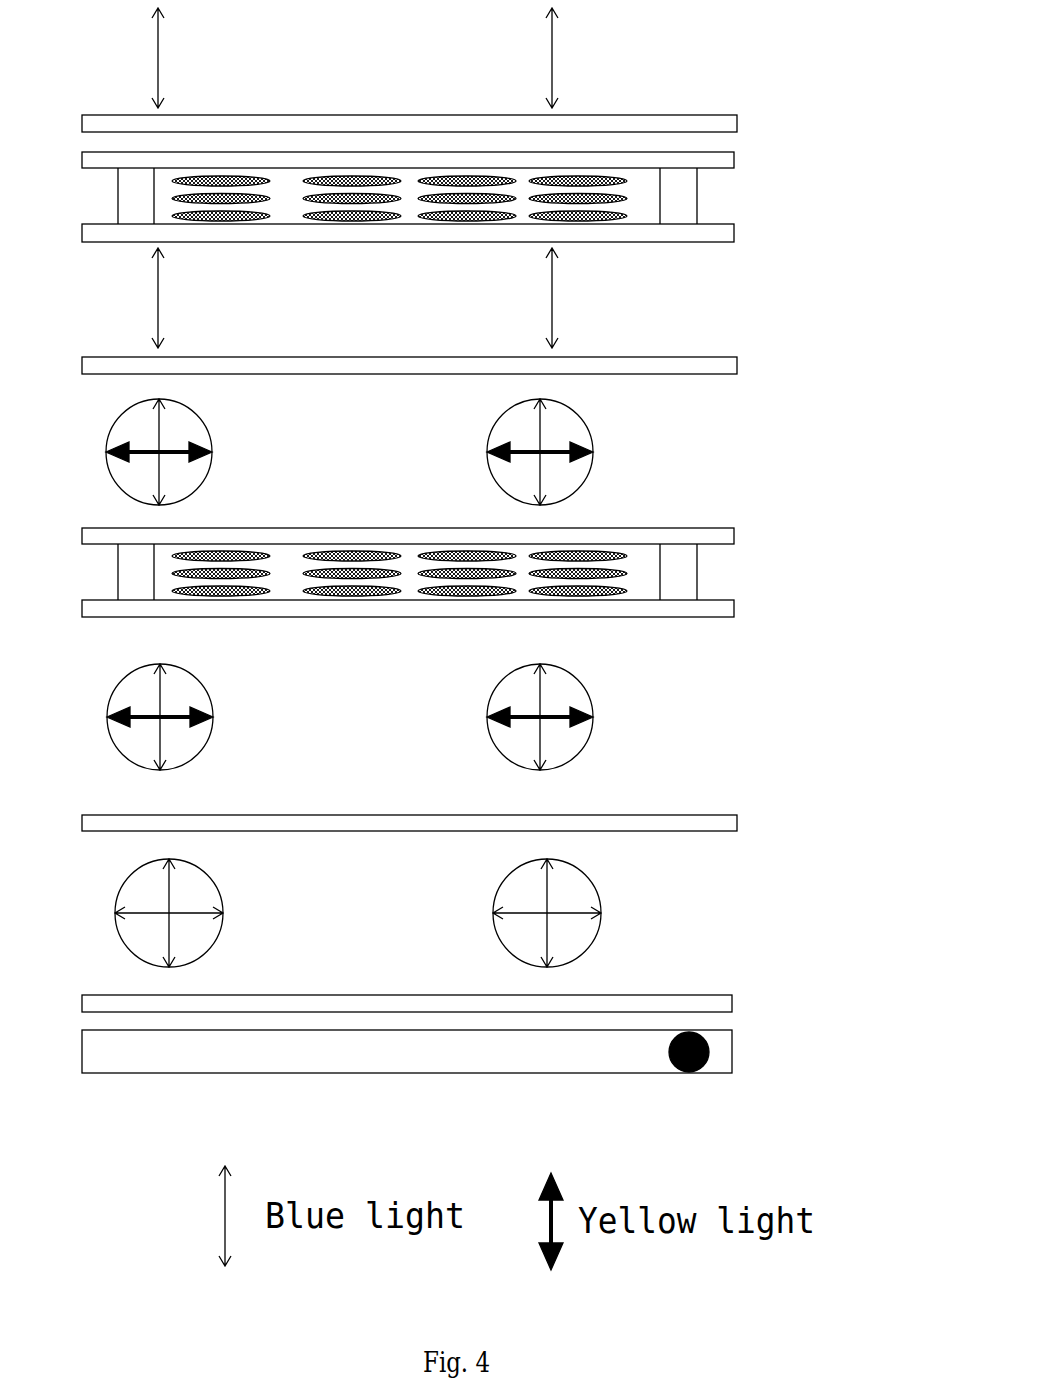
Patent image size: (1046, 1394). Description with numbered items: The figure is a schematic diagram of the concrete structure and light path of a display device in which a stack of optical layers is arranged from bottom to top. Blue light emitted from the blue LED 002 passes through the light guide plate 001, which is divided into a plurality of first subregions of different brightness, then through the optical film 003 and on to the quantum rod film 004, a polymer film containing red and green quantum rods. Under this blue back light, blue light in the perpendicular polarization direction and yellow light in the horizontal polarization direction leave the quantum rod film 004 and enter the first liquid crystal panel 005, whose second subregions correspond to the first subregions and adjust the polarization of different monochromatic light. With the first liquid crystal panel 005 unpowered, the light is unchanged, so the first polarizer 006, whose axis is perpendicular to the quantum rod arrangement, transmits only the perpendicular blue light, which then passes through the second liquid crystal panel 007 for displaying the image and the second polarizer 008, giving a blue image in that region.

The light guide plate 001 is at (532, 1050).
The blue LED 002 is at (700, 1070).
The optical film 003 is at (708, 1003).
The quantum rod film 004 is at (708, 824).
The first liquid crystal panel 005 is at (756, 528).
The first polarizer 006 is at (680, 367).
The second liquid crystal panel 007 is at (768, 137).
The second polarizer 008 is at (710, 124).